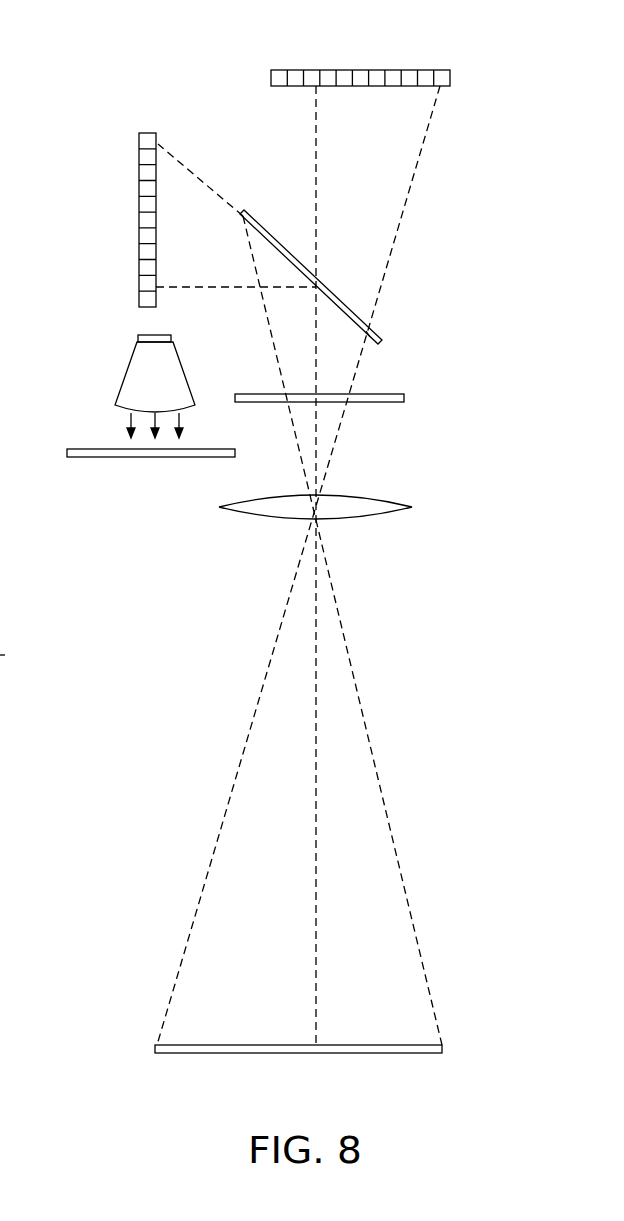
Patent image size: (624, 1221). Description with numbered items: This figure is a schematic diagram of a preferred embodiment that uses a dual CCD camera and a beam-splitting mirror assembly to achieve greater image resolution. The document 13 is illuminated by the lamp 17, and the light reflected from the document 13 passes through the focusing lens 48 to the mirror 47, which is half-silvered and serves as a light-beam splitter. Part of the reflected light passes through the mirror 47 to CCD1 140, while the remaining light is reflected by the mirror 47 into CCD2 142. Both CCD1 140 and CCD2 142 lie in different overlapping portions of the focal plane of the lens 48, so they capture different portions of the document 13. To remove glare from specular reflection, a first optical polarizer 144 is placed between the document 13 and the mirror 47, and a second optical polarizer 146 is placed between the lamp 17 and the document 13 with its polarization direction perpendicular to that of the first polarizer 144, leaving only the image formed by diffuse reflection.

The CCD1 140 is at (358, 70).
The CCD2 142 is at (139, 196).
The mirror 47 is at (264, 228).
The first optical polarizer 144 is at (363, 402).
The second optical polarizer 146 is at (88, 458).
The focusing lens 48 is at (346, 519).
The lamp 17 is at (120, 388).
The document 13 is at (408, 1053).